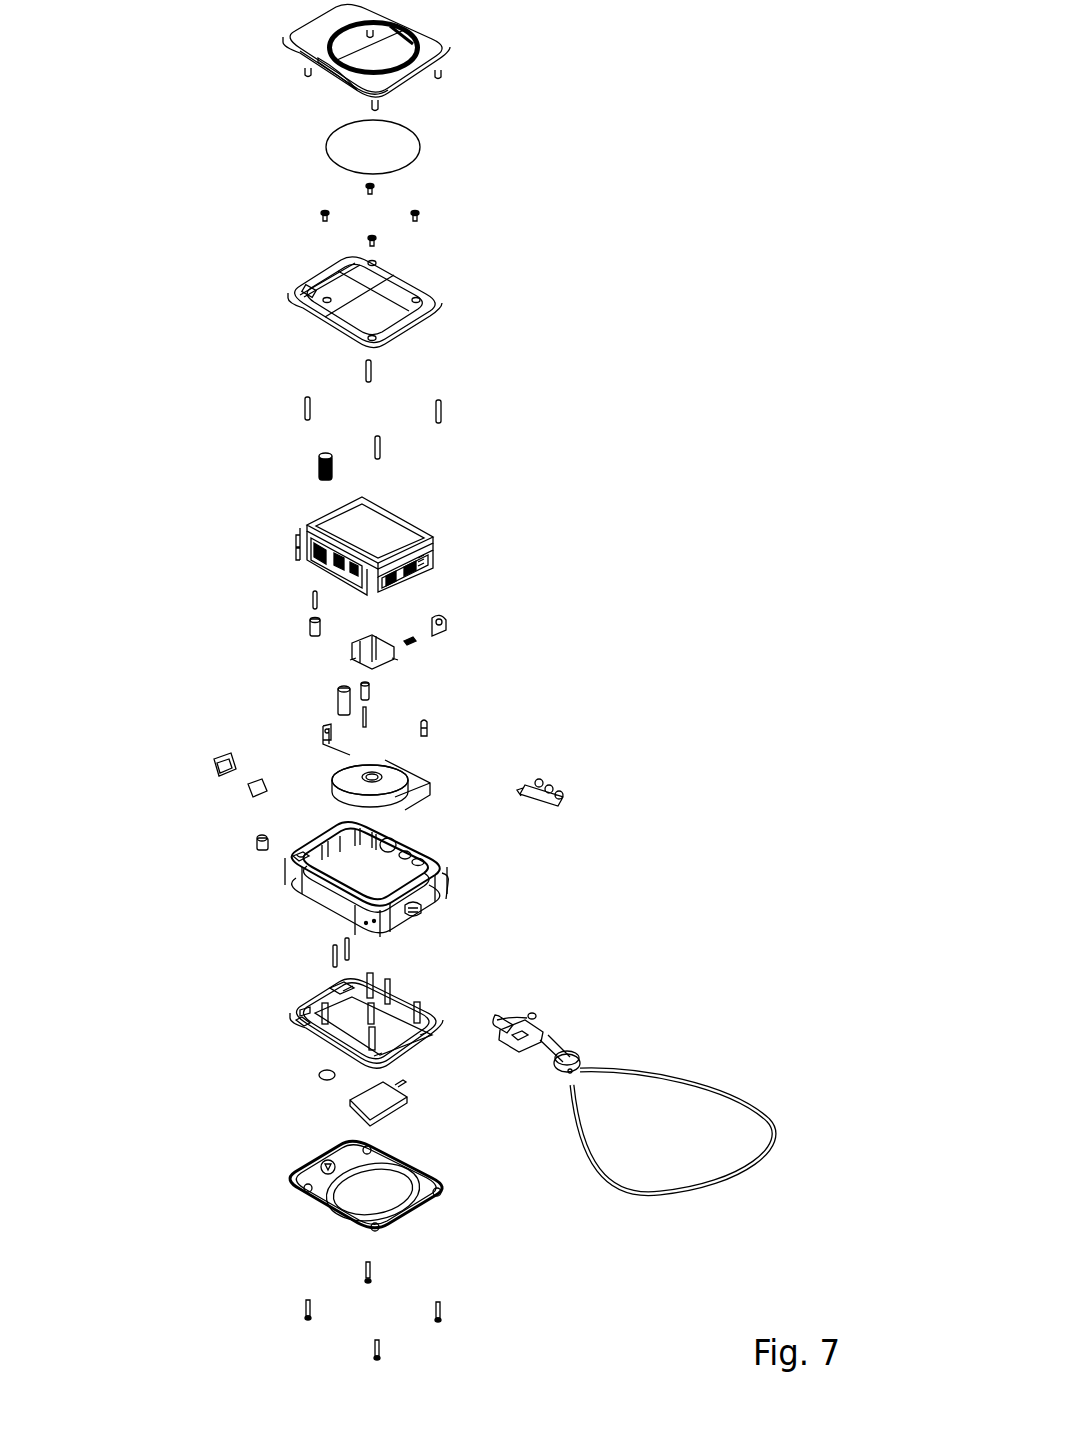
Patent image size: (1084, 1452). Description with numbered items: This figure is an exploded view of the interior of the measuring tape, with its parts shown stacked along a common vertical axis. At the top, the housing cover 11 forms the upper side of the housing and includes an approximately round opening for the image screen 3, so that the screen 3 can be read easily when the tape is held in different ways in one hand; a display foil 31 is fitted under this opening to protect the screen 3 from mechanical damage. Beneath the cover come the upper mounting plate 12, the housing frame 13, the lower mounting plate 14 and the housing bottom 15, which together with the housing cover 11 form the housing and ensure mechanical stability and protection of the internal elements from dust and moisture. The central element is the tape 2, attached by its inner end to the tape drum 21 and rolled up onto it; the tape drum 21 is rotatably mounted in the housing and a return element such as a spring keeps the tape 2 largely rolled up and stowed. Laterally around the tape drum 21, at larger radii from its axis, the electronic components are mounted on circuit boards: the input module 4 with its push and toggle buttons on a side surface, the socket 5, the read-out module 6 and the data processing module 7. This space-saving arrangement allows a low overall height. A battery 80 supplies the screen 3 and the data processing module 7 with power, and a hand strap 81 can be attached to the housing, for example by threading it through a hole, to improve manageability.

The housing cover 11 is at (450, 50).
The display foil 31 is at (393, 145).
The upper mounting plate 12 is at (398, 300).
The image screen 3 is at (426, 541).
The input module 4 is at (443, 527).
The read-out module 6 is at (433, 537).
The socket 5 is at (418, 575).
The data processing module 7 is at (317, 567).
The tape 2 is at (348, 782).
The tape drum 21 is at (350, 780).
The housing frame 13 is at (450, 883).
The lower mounting plate 14 is at (433, 1010).
The battery 80 is at (347, 1102).
The hand strap 81 is at (753, 1103).
The housing bottom 15 is at (437, 1205).